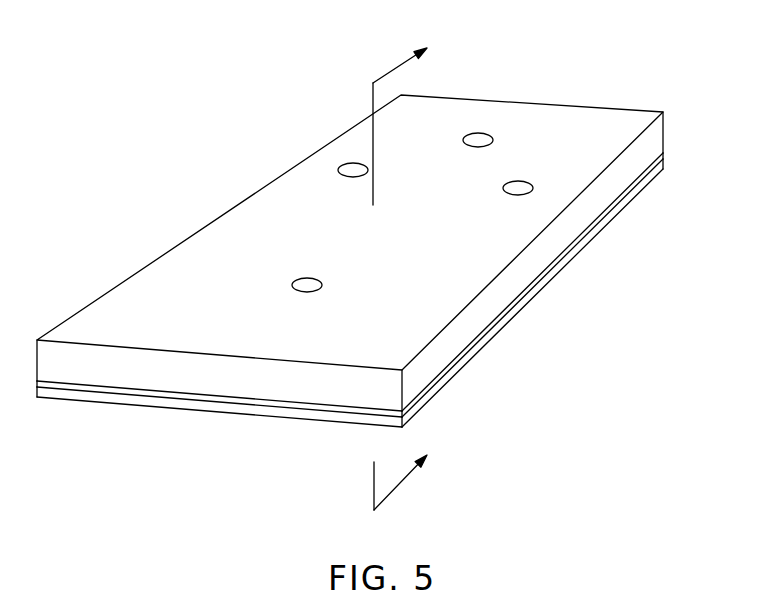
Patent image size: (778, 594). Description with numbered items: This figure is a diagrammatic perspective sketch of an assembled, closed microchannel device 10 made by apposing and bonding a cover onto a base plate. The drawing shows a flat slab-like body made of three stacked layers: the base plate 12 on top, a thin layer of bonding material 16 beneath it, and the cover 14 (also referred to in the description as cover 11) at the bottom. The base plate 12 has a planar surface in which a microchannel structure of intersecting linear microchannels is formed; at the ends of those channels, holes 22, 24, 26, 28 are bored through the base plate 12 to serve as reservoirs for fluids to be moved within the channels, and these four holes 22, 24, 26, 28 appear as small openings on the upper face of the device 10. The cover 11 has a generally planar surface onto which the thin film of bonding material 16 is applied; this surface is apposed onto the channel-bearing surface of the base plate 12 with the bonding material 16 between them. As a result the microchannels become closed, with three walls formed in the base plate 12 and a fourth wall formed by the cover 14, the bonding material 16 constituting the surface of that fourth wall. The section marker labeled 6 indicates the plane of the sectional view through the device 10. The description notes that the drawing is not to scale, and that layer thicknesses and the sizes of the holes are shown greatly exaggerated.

The microchannel device 10 is at (392, 220).
The cover 11 is at (522, 352).
The base plate 12 is at (362, 222).
The cover 14 is at (618, 214).
The bonding material 16 is at (664, 158).
The hole 22 is at (478, 133).
The hole 24 is at (351, 166).
The hole 26 is at (522, 195).
The hole 28 is at (303, 283).
The section line 6- 6 is at (408, 271).